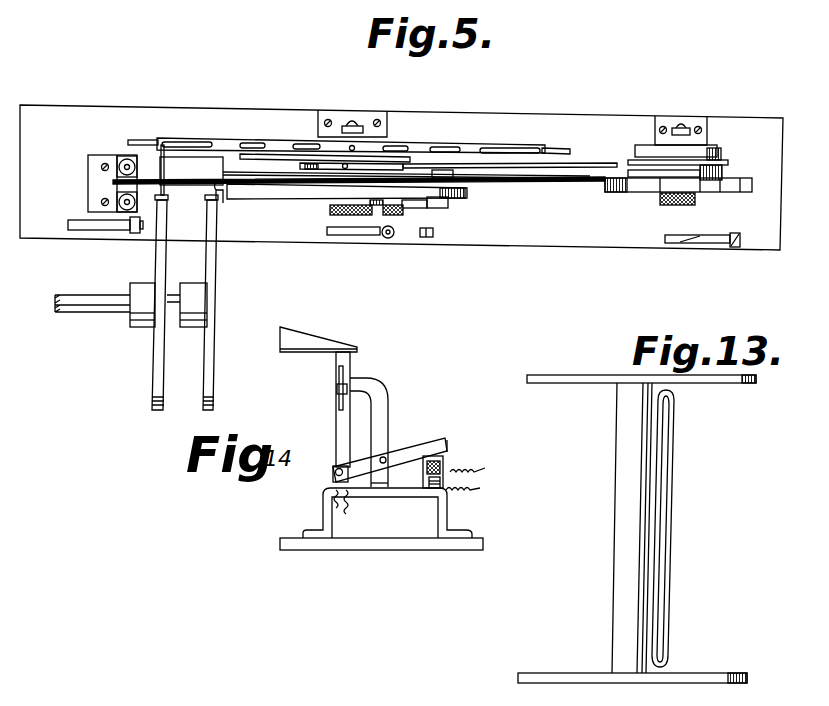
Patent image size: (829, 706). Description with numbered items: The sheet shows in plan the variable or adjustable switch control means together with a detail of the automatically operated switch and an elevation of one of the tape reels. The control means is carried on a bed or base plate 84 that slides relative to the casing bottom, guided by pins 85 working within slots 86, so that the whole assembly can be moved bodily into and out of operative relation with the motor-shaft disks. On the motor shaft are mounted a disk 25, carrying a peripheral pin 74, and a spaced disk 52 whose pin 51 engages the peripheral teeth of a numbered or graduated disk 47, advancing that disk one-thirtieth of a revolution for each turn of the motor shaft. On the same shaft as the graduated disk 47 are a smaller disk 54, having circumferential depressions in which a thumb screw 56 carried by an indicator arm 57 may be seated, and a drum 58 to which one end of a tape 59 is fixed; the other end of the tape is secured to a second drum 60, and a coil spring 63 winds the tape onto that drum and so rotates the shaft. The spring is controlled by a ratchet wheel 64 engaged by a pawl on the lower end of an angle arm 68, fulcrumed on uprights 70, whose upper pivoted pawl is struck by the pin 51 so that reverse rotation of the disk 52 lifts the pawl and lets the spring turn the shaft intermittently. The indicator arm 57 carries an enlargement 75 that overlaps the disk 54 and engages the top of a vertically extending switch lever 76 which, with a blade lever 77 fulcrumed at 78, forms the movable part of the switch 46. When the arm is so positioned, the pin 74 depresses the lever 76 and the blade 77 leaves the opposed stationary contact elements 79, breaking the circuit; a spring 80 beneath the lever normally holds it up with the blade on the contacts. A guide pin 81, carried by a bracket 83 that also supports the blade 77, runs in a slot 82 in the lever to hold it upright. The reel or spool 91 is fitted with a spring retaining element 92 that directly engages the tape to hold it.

In FIG. 5, the disk 25 is at (211, 270).
In FIG. 5, the electrical switch 46 is at (89, 180).
In FIG. 14, the electrical switch 46 is at (449, 444).
In FIG. 5, the graduated disk 47 is at (479, 143).
In FIG. 5, the pin 51 is at (163, 163).
In FIG. 5, the disk 52 is at (160, 266).
In FIG. 5, the small disk 54 is at (300, 190).
In FIG. 5, the thumb screw 56 is at (405, 209).
In FIG. 5, the indicator arm 57 is at (408, 205).
In FIG. 5, the drum 58 is at (311, 150).
In FIG. 5, the tape 59 is at (559, 166).
In FIG. 5, the second drum 60 is at (722, 160).
In FIG. 5, the coil spring 63 is at (636, 150).
In FIG. 5, the ratchet wheel 64 is at (606, 194).
In FIG. 5, the angle arm 68 is at (546, 185).
In FIG. 5, the uprights 70 is at (443, 171).
In FIG. 5, the peripheral pin 74 is at (220, 198).
In FIG. 5, the enlargement 75 is at (523, 202).
In FIG. 14, the enlargement 75 is at (303, 345).
In FIG. 14, the switch lever 76 is at (336, 432).
In FIG. 14, the lever or blade 77 is at (403, 452).
In FIG. 14, the fulcrum 78 is at (381, 461).
In FIG. 14, the stationary contact elements 79 is at (456, 468).
In FIG. 14, the spring 80 is at (337, 478).
In FIG. 14, the guide pin 81 is at (339, 392).
In FIG. 14, the slot 82 is at (337, 372).
In FIG. 14, the bracket 83 is at (384, 396).
In FIG. 5, the base plate 84 is at (544, 231).
In FIG. 5, the pins 85 is at (388, 238).
In FIG. 5, the slots 86 is at (362, 236).
In FIG. 13, the spool or reel 91 is at (617, 560).
In FIG. 13, the spring retaining element 92 is at (674, 560).